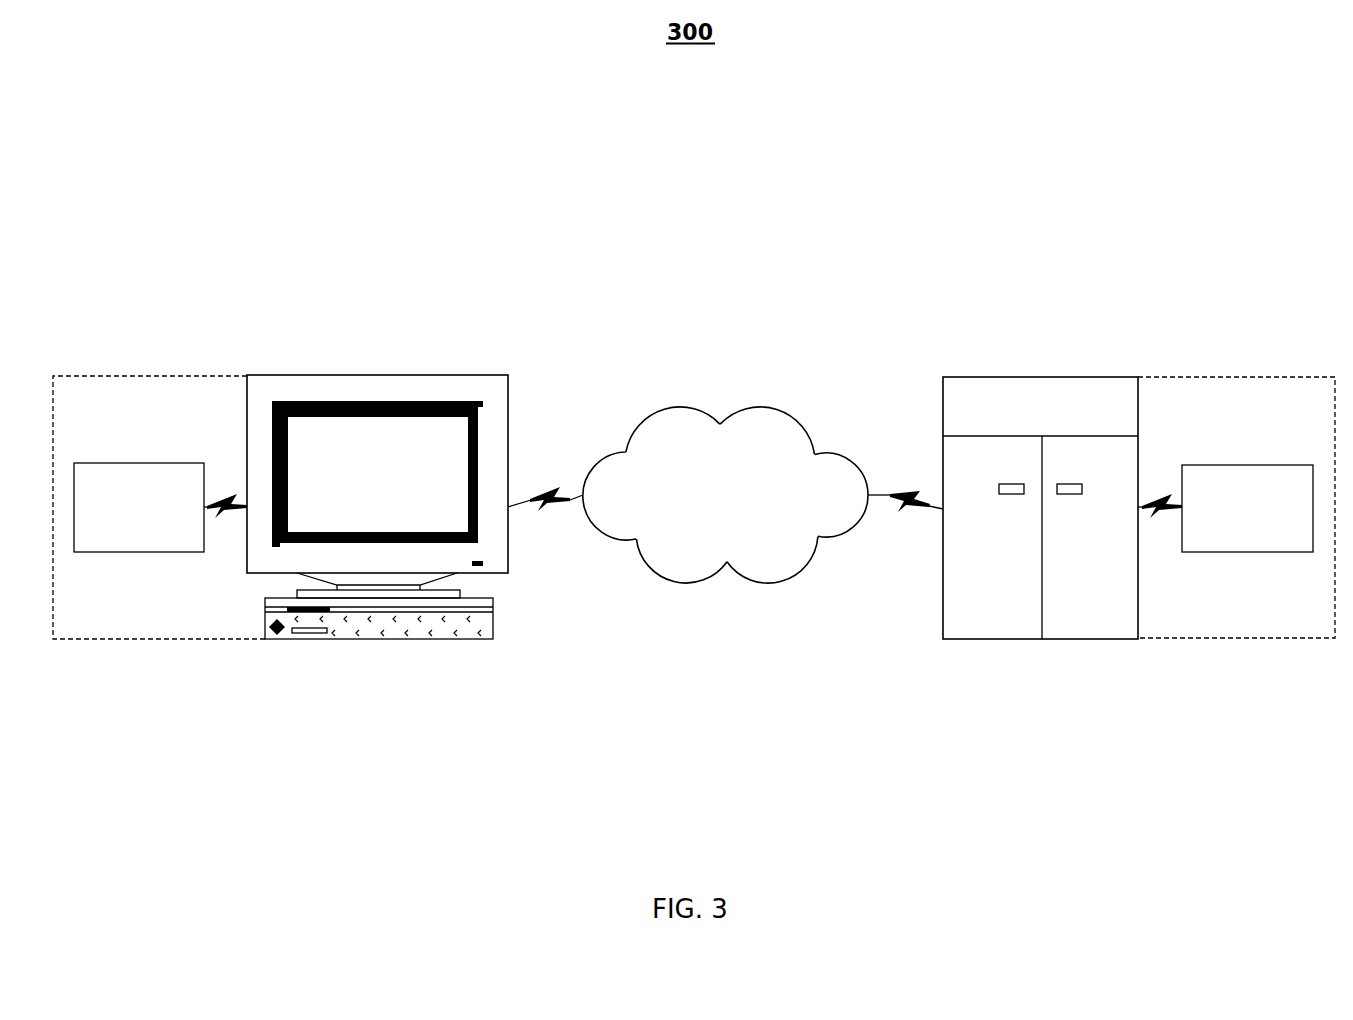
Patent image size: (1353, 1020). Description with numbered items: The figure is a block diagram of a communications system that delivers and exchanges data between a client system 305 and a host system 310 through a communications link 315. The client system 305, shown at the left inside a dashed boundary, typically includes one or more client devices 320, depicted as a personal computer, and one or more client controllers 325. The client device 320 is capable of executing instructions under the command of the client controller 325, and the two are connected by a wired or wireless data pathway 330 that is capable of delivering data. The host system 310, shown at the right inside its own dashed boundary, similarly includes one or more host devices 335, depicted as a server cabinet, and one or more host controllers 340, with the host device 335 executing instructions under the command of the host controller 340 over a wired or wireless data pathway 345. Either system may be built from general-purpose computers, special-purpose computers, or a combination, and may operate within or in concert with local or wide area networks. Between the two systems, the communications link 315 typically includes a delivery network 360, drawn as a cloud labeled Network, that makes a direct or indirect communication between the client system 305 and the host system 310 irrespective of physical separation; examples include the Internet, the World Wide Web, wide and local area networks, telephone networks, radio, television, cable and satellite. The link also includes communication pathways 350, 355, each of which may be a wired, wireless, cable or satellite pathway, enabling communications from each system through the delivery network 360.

The client system 305 is at (256, 325).
The host system 310 is at (1147, 325).
The communications link 315 is at (723, 662).
The client device 320 is at (378, 375).
The client controller 325 is at (139, 463).
The data pathway 330 is at (221, 518).
The host device 335 is at (1041, 377).
The host controller 340 is at (1248, 465).
The data pathway 345 is at (1157, 518).
The communication pathway 350 is at (538, 510).
The communication pathway 355 is at (905, 511).
The delivery network 360 is at (768, 583).